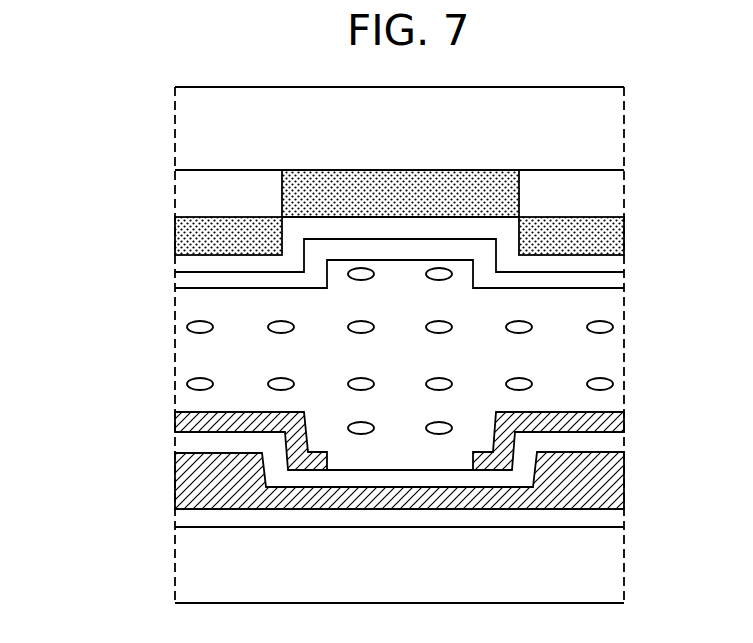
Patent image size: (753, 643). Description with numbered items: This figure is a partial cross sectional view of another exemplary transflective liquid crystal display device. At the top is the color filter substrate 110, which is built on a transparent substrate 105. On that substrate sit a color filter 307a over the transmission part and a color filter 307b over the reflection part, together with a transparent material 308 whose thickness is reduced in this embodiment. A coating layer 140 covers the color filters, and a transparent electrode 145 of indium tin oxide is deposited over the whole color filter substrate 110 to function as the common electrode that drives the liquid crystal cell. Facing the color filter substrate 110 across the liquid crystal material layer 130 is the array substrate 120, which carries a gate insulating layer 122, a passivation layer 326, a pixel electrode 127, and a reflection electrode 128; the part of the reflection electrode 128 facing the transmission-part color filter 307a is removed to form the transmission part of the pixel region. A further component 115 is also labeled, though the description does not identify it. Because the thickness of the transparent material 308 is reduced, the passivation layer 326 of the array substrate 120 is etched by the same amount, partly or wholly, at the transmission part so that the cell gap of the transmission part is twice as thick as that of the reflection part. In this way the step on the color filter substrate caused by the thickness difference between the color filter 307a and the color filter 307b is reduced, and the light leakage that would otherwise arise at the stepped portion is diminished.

The transparent substrate 105 is at (620, 123).
The transparent material 308 is at (620, 180).
The color filter on the transmission part 307a is at (519, 197).
The color filter on the reflection part 307b is at (624, 235).
The coating layer 140 is at (620, 259).
The transparent electrode 145 is at (620, 277).
The liquid crystal material layer 130 is at (175, 292).
The color filter substrate 110 is at (175, 88).
The reflection electrode 128 is at (624, 412).
The pixel electrode 127 is at (620, 440).
The passivation layer 326 is at (624, 479).
The gate insulating layer 122 is at (620, 518).
The substrate 115 is at (620, 565).
The array substrate 120 is at (175, 413).